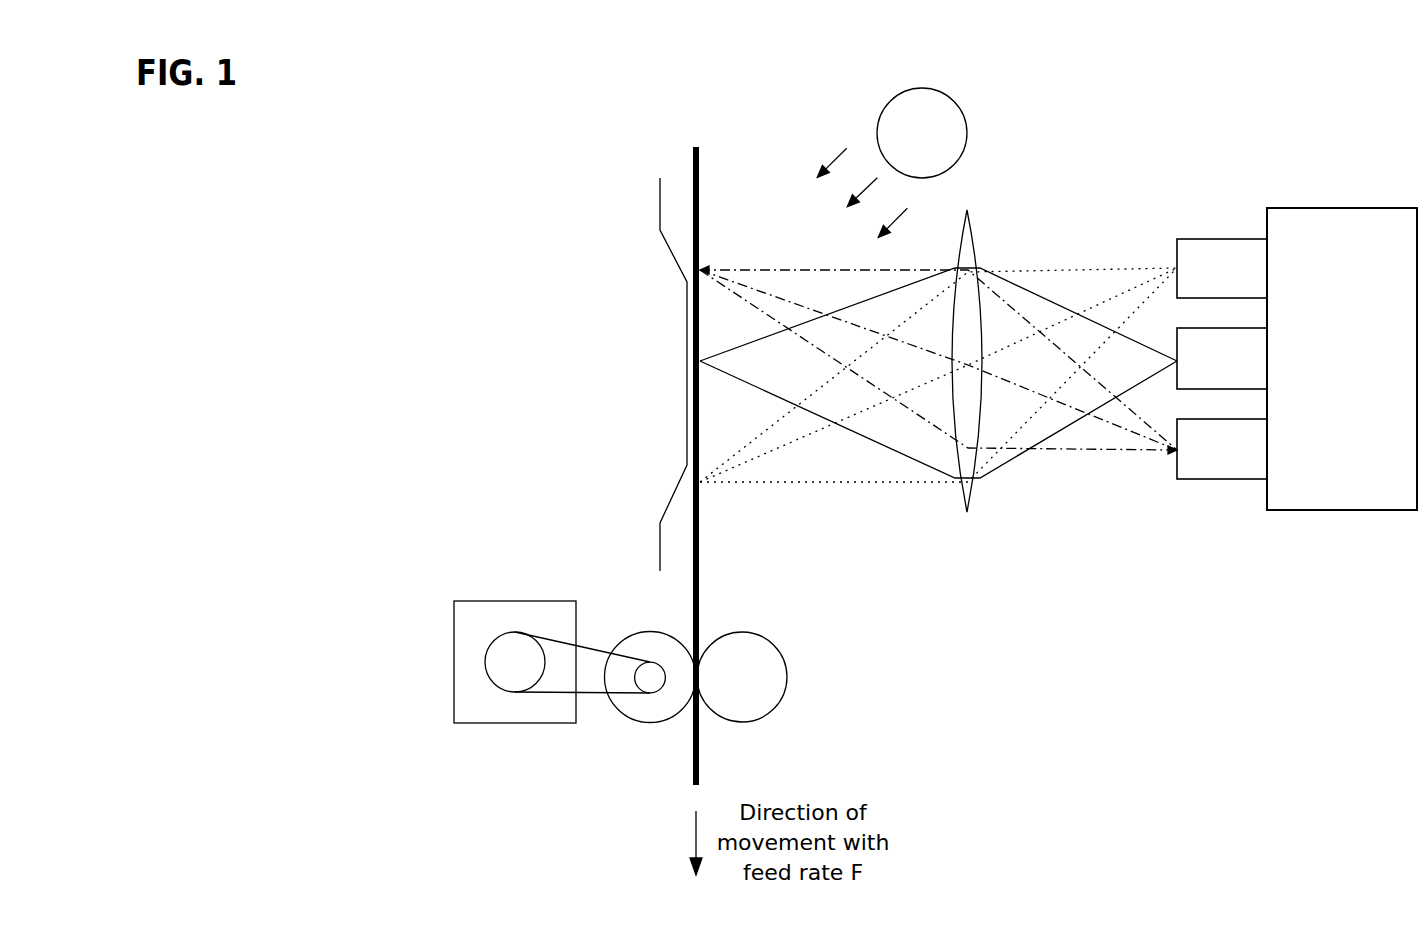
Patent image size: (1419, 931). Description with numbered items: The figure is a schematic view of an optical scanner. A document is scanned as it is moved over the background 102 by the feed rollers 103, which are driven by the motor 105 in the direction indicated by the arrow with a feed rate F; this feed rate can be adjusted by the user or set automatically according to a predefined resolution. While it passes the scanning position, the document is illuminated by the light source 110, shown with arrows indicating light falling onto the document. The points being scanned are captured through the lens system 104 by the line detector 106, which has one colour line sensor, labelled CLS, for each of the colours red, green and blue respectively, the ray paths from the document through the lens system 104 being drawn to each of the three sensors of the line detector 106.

The background 102 is at (665, 208).
The feed rollers 103 is at (787, 662).
The lens system 104 is at (969, 238).
The motor 105 is at (486, 600).
The line detector 106 is at (1298, 207).
The light source 110 is at (968, 148).